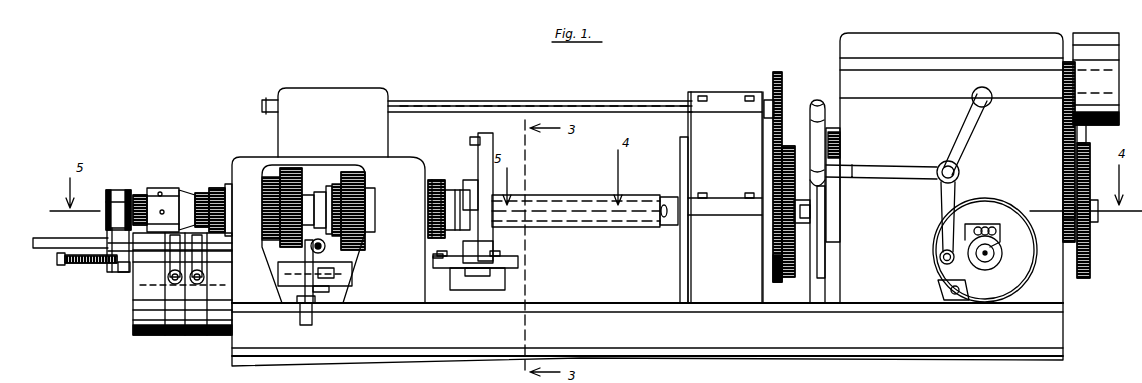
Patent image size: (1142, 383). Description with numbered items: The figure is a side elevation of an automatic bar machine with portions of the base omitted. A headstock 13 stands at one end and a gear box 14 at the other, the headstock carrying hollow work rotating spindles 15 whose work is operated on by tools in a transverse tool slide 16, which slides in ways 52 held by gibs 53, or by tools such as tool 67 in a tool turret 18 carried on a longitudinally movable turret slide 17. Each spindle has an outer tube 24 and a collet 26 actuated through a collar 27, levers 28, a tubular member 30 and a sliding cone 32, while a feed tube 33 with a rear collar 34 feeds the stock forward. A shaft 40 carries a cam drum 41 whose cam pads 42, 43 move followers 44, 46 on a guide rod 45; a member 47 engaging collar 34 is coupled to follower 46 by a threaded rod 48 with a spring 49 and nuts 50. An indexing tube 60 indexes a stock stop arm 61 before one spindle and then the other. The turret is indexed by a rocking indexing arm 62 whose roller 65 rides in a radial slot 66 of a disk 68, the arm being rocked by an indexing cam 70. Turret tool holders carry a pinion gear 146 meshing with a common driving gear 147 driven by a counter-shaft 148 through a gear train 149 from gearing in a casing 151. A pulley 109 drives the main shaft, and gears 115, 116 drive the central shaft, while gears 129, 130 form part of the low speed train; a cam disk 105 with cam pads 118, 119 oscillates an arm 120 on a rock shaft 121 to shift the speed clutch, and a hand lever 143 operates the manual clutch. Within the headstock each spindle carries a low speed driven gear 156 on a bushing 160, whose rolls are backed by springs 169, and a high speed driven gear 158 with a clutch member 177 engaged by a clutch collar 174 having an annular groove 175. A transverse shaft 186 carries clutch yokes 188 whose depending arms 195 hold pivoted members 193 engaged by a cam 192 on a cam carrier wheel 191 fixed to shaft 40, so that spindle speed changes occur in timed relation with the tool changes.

The headstock 13 is at (411, 153).
The gear box 14 is at (848, 98).
The work rotating spindle 15 is at (376, 208).
The transverse tool slide 16 is at (516, 260).
The turret slide 17 is at (690, 156).
The tool turret 18 is at (682, 268).
The outer tube 24 is at (217, 188).
The collet 26 is at (482, 232).
The collar 27 is at (152, 188).
The levers 28 is at (185, 190).
The tubular member 30 is at (138, 194).
The cone 32 is at (201, 193).
The feed tube 33 is at (106, 203).
The collar 34 is at (116, 190).
The shaft 40 is at (352, 274).
The cam drum 41 is at (180, 325).
The cam pad 42 is at (215, 283).
The cam pad 43 is at (150, 302).
The follower 44 is at (205, 265).
The guide rod 45 is at (78, 235).
The follower 46 is at (170, 270).
The member 47 is at (112, 265).
The threaded rod 48 is at (62, 265).
The spring 49 is at (80, 265).
The nuts 50 is at (122, 270).
The ways 52 is at (505, 286).
The gibs 53 is at (520, 270).
The indexing tube 60 is at (590, 196).
The stock stop arm 61 is at (485, 165).
The indexing arm 62 is at (825, 286).
The roller 65 is at (808, 214).
The radial slot 66 is at (810, 208).
The tool 67 is at (662, 198).
The disk 68 is at (790, 148).
The indexing cam 70 is at (825, 256).
The cam disk 105 is at (940, 258).
The pulley 109 is at (1116, 88).
The gear 115 is at (1090, 254).
The gear 116 is at (1090, 228).
The cam pad 118 is at (948, 284).
The cam pad 119 is at (998, 232).
The arm 120 is at (942, 220).
The rock shaft 121 is at (960, 172).
The gear 129 is at (1063, 222).
The gear 130 is at (1063, 133).
The hand lever 143 is at (960, 146).
The pinion gear 146 is at (762, 234).
The driving gear 147 is at (773, 260).
The counter-shaft 148 is at (640, 114).
The gear train 149 is at (782, 88).
The casing 151 is at (338, 100).
The low speed driven gear 156 is at (292, 168).
The high speed driven gear 158 is at (360, 180).
The bushing 160 is at (268, 208).
The spring 169 is at (305, 205).
The clutch collar 174 is at (329, 186).
The annular groove 175 is at (318, 192).
The clutch member 177 is at (338, 184).
The shaft 186 is at (313, 262).
The clutch yoke 188 is at (325, 247).
The cam carrier wheel 191 is at (304, 316).
The cam 192 is at (312, 308).
The members 193 is at (333, 272).
The depending arms 195 is at (330, 288).